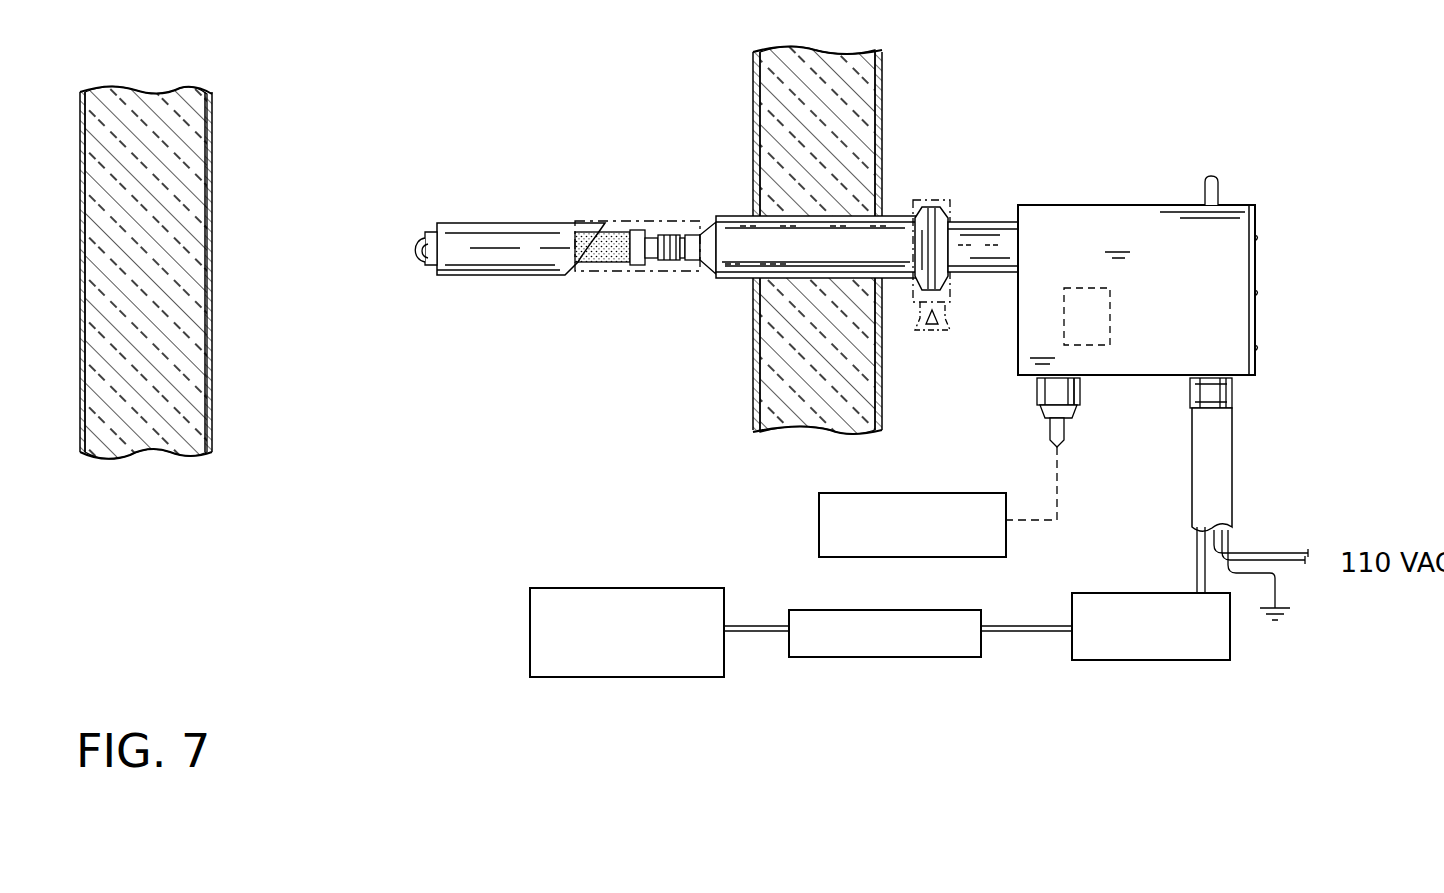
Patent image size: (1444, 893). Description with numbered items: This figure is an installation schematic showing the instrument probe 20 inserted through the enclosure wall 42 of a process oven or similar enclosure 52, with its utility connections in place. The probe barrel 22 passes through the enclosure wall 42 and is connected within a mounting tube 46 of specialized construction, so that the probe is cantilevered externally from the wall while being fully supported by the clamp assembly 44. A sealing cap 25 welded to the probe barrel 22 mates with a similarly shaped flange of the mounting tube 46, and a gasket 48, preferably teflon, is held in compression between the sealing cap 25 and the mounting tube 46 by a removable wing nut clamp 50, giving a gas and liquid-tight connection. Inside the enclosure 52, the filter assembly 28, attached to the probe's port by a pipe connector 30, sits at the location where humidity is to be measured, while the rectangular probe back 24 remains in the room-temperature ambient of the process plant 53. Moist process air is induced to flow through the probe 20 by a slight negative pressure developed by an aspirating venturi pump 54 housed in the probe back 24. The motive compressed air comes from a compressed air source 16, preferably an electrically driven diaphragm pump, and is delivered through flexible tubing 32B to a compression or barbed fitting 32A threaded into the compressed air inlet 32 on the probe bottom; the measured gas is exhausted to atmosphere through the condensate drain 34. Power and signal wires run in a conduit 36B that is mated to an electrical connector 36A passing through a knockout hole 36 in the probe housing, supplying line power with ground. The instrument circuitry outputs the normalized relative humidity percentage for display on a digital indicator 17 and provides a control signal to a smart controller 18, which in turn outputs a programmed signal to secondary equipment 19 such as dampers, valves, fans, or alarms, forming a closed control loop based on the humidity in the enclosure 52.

The compressed air source 16 is at (819, 526).
The digital indicator 17 is at (1145, 660).
The controller 18 is at (885, 657).
The secondary equipment 19 is at (625, 677).
The instrument probe 20 is at (1175, 262).
The probe barrel 22 is at (775, 262).
The probe back 24 is at (1140, 207).
The sealing cap 25 is at (948, 220).
The filter assembly 28 is at (587, 296).
The pipe connector 30 is at (690, 225).
The compressed air inlet 32 is at (1037, 388).
The fitting 32A is at (1042, 408).
The flexible tubing 32B is at (1050, 433).
The condensate drain 34 is at (1082, 388).
The knockout hole 36 is at (1235, 383).
The electrical connector 36A is at (1235, 398).
The conduit 36B is at (1228, 422).
The enclosure wall 42 is at (884, 93).
The clamp assembly 44 is at (972, 298).
The mounting tube 46 is at (889, 215).
The gasket 48 is at (930, 215).
The wing nut clamp 50 is at (945, 330).
The enclosure 52 is at (465, 143).
The process plant 53 is at (1127, 97).
The venturi pump 54 is at (1108, 320).